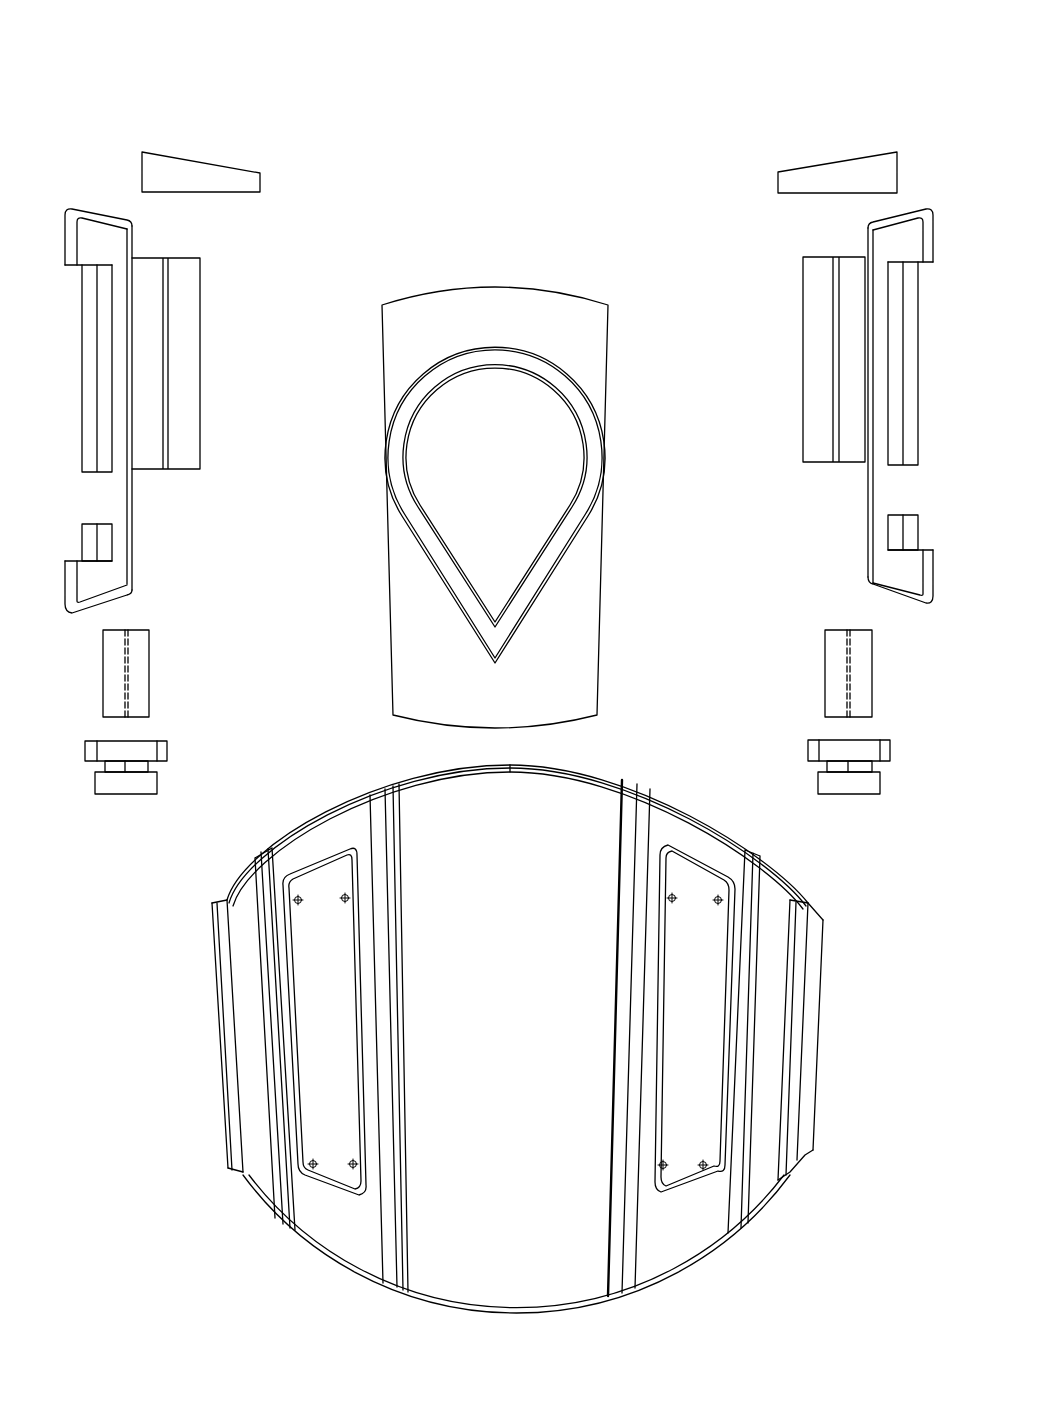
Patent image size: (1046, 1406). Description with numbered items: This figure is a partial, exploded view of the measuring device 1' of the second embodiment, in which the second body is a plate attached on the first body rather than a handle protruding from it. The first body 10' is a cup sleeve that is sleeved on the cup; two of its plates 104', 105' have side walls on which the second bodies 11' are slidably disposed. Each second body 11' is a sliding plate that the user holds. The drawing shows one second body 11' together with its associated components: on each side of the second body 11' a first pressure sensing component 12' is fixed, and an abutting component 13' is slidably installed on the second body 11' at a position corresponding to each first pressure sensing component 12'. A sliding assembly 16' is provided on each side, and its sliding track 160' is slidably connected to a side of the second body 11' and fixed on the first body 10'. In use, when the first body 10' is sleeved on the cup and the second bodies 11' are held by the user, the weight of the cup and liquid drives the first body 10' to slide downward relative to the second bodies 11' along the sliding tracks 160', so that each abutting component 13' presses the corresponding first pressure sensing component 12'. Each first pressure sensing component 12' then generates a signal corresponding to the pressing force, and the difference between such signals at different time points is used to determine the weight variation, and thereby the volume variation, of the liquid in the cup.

The measuring device 1' is at (499, 692).
The first body 10' is at (525, 1012).
The second body 11' is at (495, 459).
The first pressure sensing component 12' is at (487, 820).
The abutting component 13' is at (487, 753).
The sliding assembly 16' is at (519, 121).
The plate 104' is at (331, 1002).
The plate 105' is at (225, 975).
The sliding track 160' is at (499, 411).